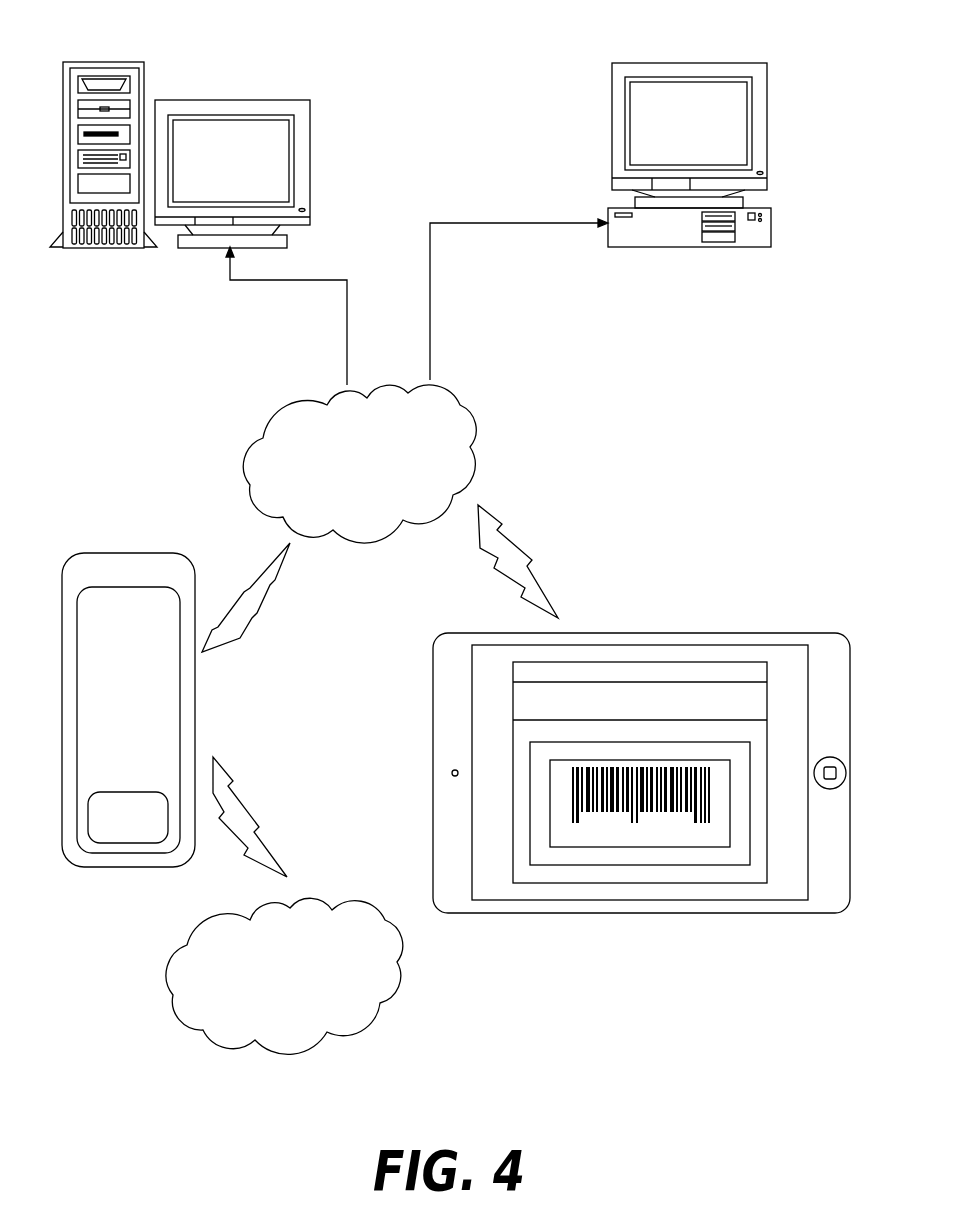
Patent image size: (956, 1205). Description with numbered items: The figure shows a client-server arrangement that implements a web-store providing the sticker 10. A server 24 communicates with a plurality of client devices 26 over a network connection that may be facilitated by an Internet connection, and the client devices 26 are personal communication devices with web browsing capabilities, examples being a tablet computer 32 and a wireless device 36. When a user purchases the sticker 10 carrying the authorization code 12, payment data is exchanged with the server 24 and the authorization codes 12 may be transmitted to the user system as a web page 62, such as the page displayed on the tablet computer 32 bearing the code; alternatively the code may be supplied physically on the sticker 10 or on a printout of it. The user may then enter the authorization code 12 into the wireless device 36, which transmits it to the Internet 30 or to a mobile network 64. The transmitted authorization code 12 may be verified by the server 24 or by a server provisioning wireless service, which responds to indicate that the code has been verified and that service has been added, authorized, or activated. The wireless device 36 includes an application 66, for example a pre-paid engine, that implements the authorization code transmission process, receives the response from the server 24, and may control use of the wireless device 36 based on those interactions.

The sticker 10 is at (528, 803).
The authorization code 12 is at (562, 847).
The server 24 is at (311, 153).
The client devices 26 is at (768, 138).
The Internet 30 is at (373, 488).
The tablet computer 32 is at (677, 913).
The wireless device 36 is at (138, 644).
The web page 62 is at (767, 857).
The mobile network 64 is at (297, 1012).
The application 66 is at (138, 831).